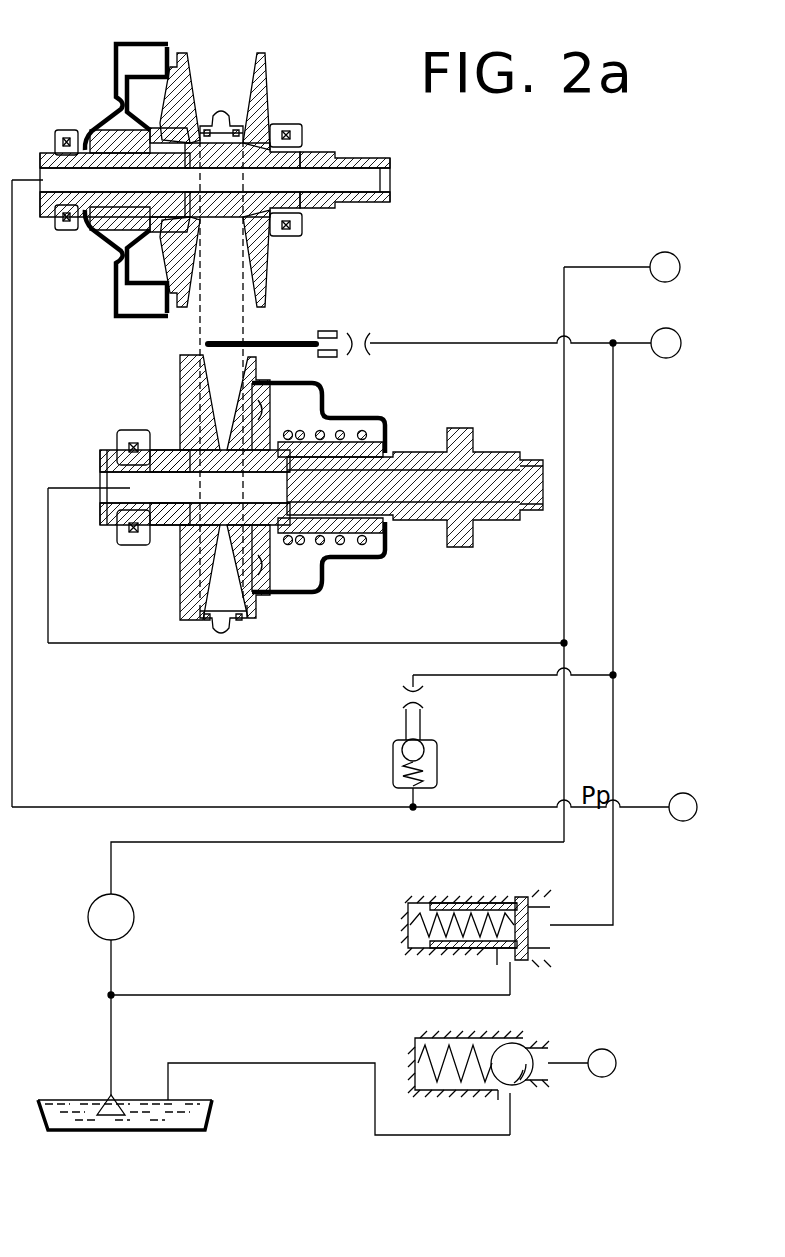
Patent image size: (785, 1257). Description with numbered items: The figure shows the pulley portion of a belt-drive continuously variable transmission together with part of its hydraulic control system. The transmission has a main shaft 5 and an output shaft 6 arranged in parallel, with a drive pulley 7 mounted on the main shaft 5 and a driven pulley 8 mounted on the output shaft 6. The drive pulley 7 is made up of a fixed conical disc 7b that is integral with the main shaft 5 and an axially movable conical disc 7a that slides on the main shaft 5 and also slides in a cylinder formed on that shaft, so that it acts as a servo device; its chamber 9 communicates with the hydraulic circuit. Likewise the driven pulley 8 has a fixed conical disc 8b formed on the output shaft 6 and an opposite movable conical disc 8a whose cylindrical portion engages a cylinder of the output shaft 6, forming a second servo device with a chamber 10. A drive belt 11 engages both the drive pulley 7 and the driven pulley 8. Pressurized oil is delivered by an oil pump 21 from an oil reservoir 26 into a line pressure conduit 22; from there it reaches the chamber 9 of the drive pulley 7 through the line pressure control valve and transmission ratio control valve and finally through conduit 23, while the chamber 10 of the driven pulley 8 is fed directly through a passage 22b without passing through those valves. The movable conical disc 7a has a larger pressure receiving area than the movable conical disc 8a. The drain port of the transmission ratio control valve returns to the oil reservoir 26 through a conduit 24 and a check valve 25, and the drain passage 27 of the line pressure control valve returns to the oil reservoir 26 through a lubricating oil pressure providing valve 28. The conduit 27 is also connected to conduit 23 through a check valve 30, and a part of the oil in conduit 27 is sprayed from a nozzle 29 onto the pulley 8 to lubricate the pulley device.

The main shaft 5 is at (320, 150).
The output shaft 6 is at (475, 462).
The drive pulley 7 is at (280, 51).
The movable conical disc 7a is at (188, 57).
The fixed conical disc 7b is at (263, 98).
The driven pulley 8 is at (150, 396).
The movable conical disc 8a is at (256, 603).
The fixed conical disc 8b is at (192, 577).
The chamber 9 is at (126, 95).
The chamber 10 is at (345, 562).
The drive belt 11 is at (236, 110).
The oil pump 21 is at (134, 925).
The line pressure conduit 22 is at (567, 266).
The passage 22b is at (466, 633).
The conduit 23 is at (655, 795).
The conduit 24 is at (558, 1060).
The check valve 25 is at (473, 1017).
The oil reservoir 26 is at (206, 1120).
The drain passage 27 is at (615, 887).
The lubricating oil pressure providing valve 28 is at (478, 874).
The nozzle 29 is at (288, 338).
The check valve 30 is at (440, 776).